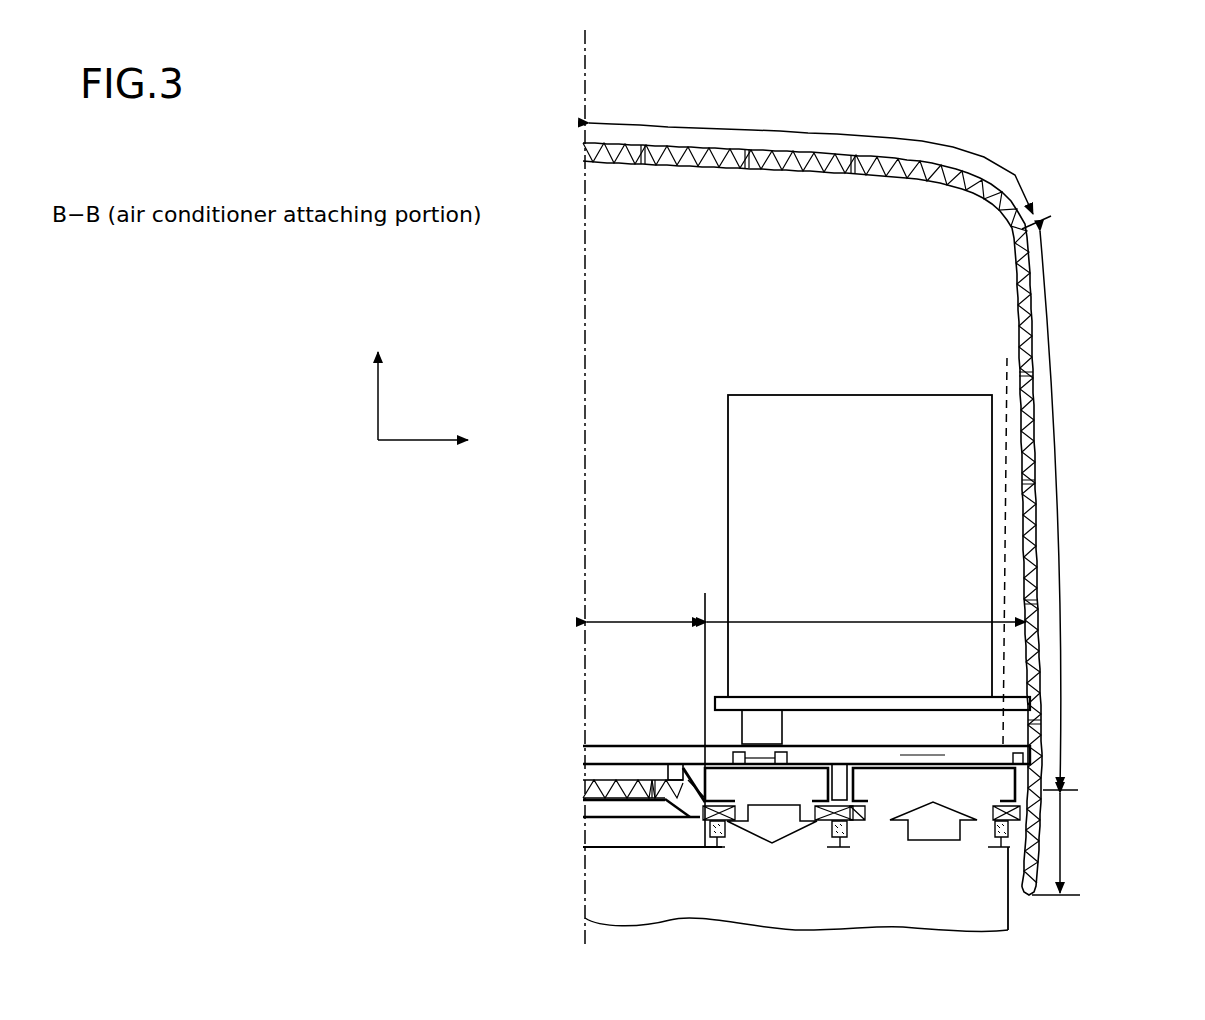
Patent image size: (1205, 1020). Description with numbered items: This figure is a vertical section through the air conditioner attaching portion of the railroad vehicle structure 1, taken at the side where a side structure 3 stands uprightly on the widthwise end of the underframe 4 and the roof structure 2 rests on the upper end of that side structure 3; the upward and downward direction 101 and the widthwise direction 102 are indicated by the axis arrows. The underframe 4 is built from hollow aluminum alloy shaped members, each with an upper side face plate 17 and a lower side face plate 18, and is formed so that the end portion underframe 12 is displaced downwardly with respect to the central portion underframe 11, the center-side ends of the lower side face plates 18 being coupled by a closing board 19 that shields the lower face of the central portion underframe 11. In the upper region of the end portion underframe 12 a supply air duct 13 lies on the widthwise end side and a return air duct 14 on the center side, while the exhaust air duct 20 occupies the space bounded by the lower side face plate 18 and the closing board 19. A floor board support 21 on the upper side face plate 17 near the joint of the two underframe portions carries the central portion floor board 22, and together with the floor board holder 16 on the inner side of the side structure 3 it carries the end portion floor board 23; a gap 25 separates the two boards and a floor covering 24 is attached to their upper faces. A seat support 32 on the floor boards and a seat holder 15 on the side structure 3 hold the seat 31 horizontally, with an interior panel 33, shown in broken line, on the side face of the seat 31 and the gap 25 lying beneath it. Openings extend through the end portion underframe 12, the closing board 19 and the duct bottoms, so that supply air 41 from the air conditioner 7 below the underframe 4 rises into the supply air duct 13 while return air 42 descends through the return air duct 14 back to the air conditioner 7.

The railroad vehicle structure 1 is at (1031, 144).
The roof structure 2 is at (820, 170).
The side structure 3 is at (1060, 510).
The underframe 4 is at (1056, 844).
The air conditioner 7 is at (834, 913).
The central portion underframe 11 is at (645, 607).
The end portion underframe 12 is at (866, 607).
The supply air duct 13 is at (948, 797).
The return air duct 14 is at (780, 797).
The seat holder 15 is at (1043, 740).
The floor board holder 16 is at (1043, 804).
The upper side face plate 17 is at (604, 780).
The lower side face plate 18 is at (592, 802).
The closing board 19 is at (602, 823).
The exhaust air duct 20 is at (627, 807).
The floor board support 21 is at (677, 764).
The central portion floor board 22 is at (592, 757).
The end portion floor board 23 is at (923, 754).
The floor covering 24 is at (594, 746).
The gap 25 is at (762, 757).
The seat 31 is at (830, 477).
The seat support 32 is at (776, 740).
The interior panel 33 is at (1004, 600).
The supply air 41 is at (946, 840).
The return air 42 is at (783, 833).
The upward and downward direction 101 is at (383, 380).
The widthwise direction 102 is at (454, 449).